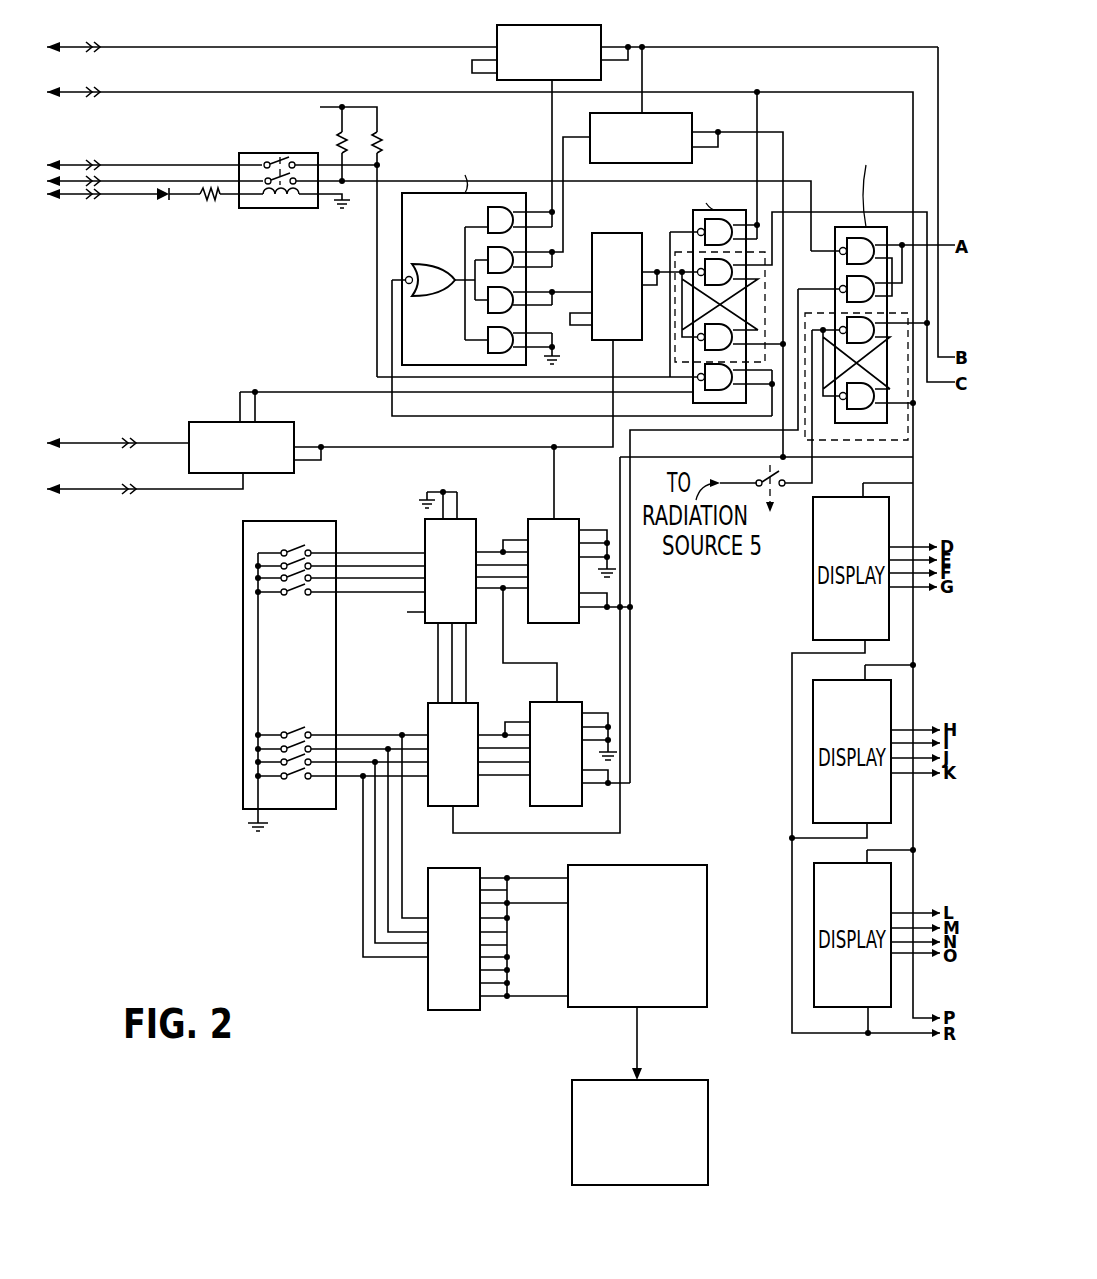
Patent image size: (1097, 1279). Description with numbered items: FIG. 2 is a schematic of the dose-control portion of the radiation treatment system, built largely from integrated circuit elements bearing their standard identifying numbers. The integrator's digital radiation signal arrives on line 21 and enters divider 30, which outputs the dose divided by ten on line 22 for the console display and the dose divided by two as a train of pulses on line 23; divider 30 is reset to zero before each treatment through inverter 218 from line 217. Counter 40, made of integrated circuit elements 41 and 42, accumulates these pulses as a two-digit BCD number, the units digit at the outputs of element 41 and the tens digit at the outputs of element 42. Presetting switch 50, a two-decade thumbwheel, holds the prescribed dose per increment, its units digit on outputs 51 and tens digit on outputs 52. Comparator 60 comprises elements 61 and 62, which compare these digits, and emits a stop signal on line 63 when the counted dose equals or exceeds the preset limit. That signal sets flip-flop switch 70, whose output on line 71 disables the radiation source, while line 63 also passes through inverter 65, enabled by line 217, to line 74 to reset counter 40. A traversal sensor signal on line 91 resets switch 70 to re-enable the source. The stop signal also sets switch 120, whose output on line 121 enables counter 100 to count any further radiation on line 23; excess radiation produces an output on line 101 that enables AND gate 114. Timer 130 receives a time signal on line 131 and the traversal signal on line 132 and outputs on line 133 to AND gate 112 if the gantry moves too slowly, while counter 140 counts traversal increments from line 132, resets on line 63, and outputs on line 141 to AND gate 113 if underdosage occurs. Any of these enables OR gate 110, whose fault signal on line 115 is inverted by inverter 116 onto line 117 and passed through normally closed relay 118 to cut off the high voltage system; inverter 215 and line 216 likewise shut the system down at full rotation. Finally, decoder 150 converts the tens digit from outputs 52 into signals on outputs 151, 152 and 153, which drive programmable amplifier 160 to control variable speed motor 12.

The variable speed motor 12 is at (712, 1058).
The line 21 is at (112, 443).
The line 22 is at (160, 489).
The line 23 is at (388, 447).
The divider 30 is at (196, 422).
The counter 40 is at (580, 634).
The integrated circuit element 41 is at (586, 503).
The integrated circuit element 42 is at (575, 702).
The presetting switch 50 is at (243, 620).
The outputs 51 is at (355, 553).
The outputs 52 is at (358, 735).
The comparator 60 is at (459, 639).
The integrated circuit element 61 is at (425, 548).
The integrated circuit element 62 is at (428, 706).
The line 63 is at (862, 457).
The inverter 65 is at (880, 284).
The switch 70 is at (887, 437).
The line 71 is at (818, 396).
The line 74 is at (803, 285).
The line 91 is at (908, 397).
The counter 100 is at (593, 233).
The line 101 is at (586, 292).
The OR gate 110 is at (422, 268).
The AND gate 112 is at (488, 217).
The AND gate 113 is at (488, 257).
The AND gate 114 is at (488, 308).
The line 115 is at (392, 416).
The inverter 116 is at (693, 396).
The line 117 is at (377, 300).
The relay 118 is at (279, 153).
The switch 120 is at (676, 252).
The line 121 is at (657, 290).
The timer 130 is at (601, 36).
The line 131 is at (460, 46).
The line 132 is at (790, 47).
The line 133 is at (552, 115).
The counter 140 is at (692, 113).
The line 141 is at (564, 137).
The decoder 150 is at (428, 1002).
The output 151 is at (538, 877).
The output 152 is at (538, 906).
The output 153 is at (528, 997).
The programmable amplifier 160 is at (686, 865).
The inverter 215 is at (848, 238).
The line 216 is at (785, 140).
The line 217 is at (800, 92).
The inverter 218 is at (700, 228).